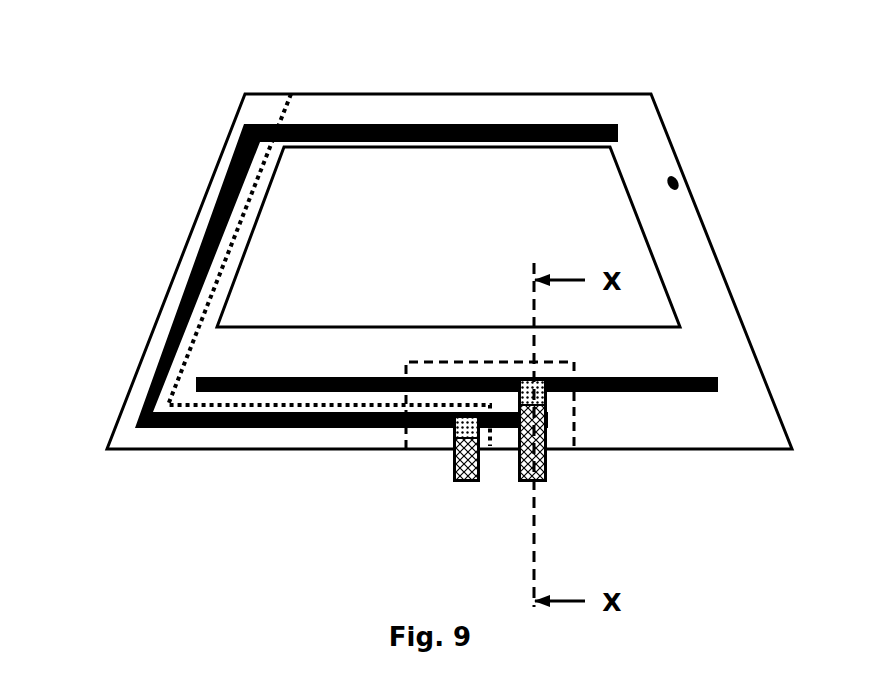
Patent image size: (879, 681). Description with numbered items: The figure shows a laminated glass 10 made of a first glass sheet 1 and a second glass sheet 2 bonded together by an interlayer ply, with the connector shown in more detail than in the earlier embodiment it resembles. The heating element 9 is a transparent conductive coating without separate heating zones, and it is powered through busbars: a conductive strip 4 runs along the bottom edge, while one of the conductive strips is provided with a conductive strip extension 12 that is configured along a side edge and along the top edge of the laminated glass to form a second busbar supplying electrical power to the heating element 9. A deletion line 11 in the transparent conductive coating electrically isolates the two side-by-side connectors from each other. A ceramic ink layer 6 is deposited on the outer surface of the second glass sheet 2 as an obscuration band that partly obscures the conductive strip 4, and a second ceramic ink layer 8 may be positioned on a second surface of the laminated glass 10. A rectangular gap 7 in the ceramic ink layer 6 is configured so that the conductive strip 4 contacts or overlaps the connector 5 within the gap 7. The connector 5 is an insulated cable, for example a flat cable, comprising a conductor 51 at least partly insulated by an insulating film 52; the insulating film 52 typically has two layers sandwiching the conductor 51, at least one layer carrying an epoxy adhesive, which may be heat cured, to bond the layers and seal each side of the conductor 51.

The laminated glass 10 is at (422, 229).
The first glass sheet 1 is at (430, 271).
The second glass sheet 2 is at (207, 195).
The heating element 9 is at (575, 180).
The conductive strip extension 12 is at (373, 125).
The deletion line 11 is at (288, 92).
The conductive strip 4 is at (253, 392).
The connector 5 is at (619, 481).
The conductor 51 is at (548, 395).
The insulating film 52 is at (548, 455).
The gap 7 is at (405, 452).
The ceramic ink layer 6 is at (735, 157).
The second ceramic ink layer 8 is at (680, 177).